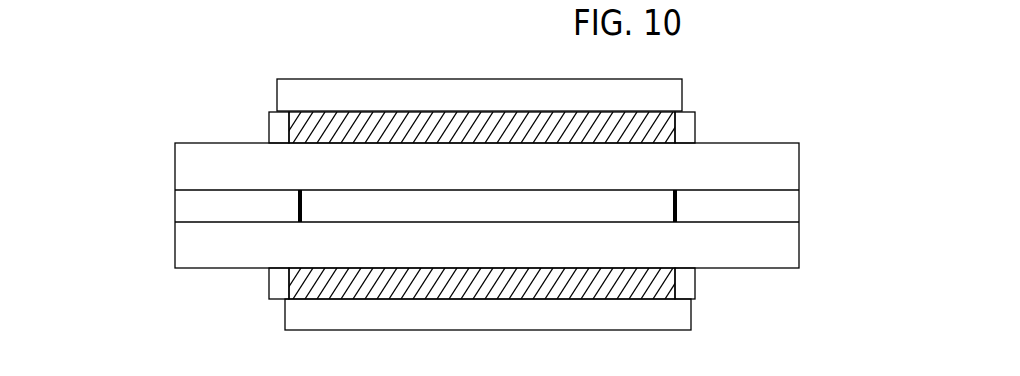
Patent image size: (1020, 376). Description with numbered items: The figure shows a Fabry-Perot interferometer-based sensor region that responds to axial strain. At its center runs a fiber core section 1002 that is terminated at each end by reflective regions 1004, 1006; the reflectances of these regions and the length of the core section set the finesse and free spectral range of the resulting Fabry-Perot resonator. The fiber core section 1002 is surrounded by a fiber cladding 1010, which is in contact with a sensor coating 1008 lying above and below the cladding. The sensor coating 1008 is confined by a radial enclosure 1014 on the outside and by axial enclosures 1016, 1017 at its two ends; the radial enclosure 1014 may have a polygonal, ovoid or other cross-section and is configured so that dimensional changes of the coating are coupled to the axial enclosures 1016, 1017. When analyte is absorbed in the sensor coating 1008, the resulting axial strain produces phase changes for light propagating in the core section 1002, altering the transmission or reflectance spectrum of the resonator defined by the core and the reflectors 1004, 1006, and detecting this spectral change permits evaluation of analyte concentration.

The fiber core section 1002 is at (478, 215).
The reflective region 1004 is at (675, 190).
The reflective region 1006 is at (300, 190).
The sensor coating 1008 is at (445, 134).
The fiber cladding 1010 is at (207, 237).
The radial enclosure 1014 is at (423, 79).
The axial enclosure 1016 is at (270, 112).
The axial enclosure 1017 is at (697, 111).